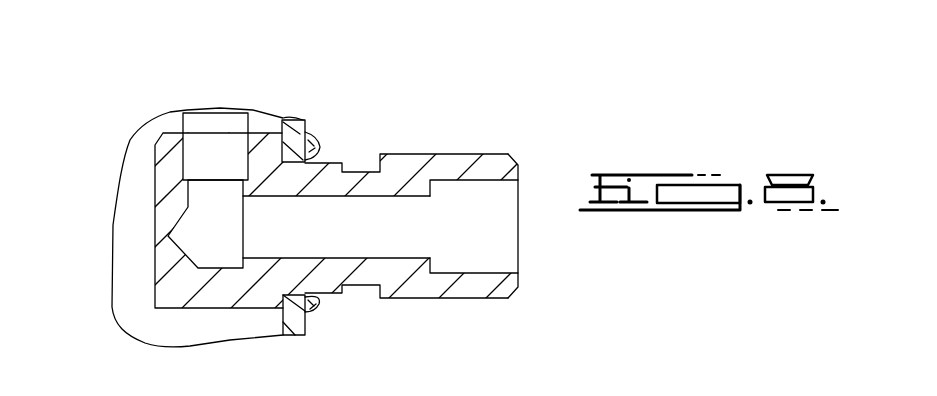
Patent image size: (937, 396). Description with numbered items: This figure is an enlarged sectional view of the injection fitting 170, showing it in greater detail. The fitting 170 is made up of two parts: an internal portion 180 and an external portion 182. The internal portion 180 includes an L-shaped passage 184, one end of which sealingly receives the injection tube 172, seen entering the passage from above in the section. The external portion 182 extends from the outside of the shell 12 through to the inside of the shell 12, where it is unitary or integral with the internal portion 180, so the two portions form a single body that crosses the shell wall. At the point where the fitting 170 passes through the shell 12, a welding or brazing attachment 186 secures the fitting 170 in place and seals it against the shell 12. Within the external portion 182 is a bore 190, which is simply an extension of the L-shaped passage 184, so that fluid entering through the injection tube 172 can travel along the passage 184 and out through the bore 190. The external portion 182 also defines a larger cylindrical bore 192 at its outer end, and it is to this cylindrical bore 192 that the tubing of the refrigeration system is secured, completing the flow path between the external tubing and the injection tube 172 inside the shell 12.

The shell 12 is at (300, 328).
The fitting 170 is at (378, 74).
The injection tube 172 is at (212, 118).
The internal portion 180 is at (180, 291).
The external portion 182 is at (505, 290).
The L-shaped passage 184 is at (208, 230).
The welding or brazing attachment 186 is at (318, 153).
The bore 190 is at (387, 240).
The cylindrical bore 192 is at (488, 183).